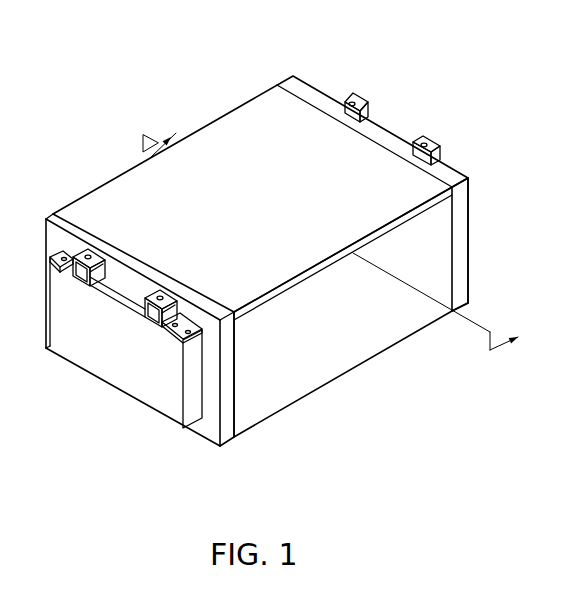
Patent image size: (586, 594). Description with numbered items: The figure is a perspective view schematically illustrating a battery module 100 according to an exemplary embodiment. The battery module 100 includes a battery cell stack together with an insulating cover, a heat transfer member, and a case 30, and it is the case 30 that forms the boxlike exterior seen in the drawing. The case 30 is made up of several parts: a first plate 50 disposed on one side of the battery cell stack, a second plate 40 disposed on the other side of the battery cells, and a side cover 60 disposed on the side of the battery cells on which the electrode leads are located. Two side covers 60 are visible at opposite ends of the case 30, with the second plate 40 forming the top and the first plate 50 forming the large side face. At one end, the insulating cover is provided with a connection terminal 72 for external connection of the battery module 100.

The battery module 100 is at (179, 28).
The case 30 is at (467, 412).
The second plate 40 is at (285, 267).
The first plate 50 is at (328, 360).
The side cover 60 is at (462, 300).
The connection terminal 72 is at (163, 323).